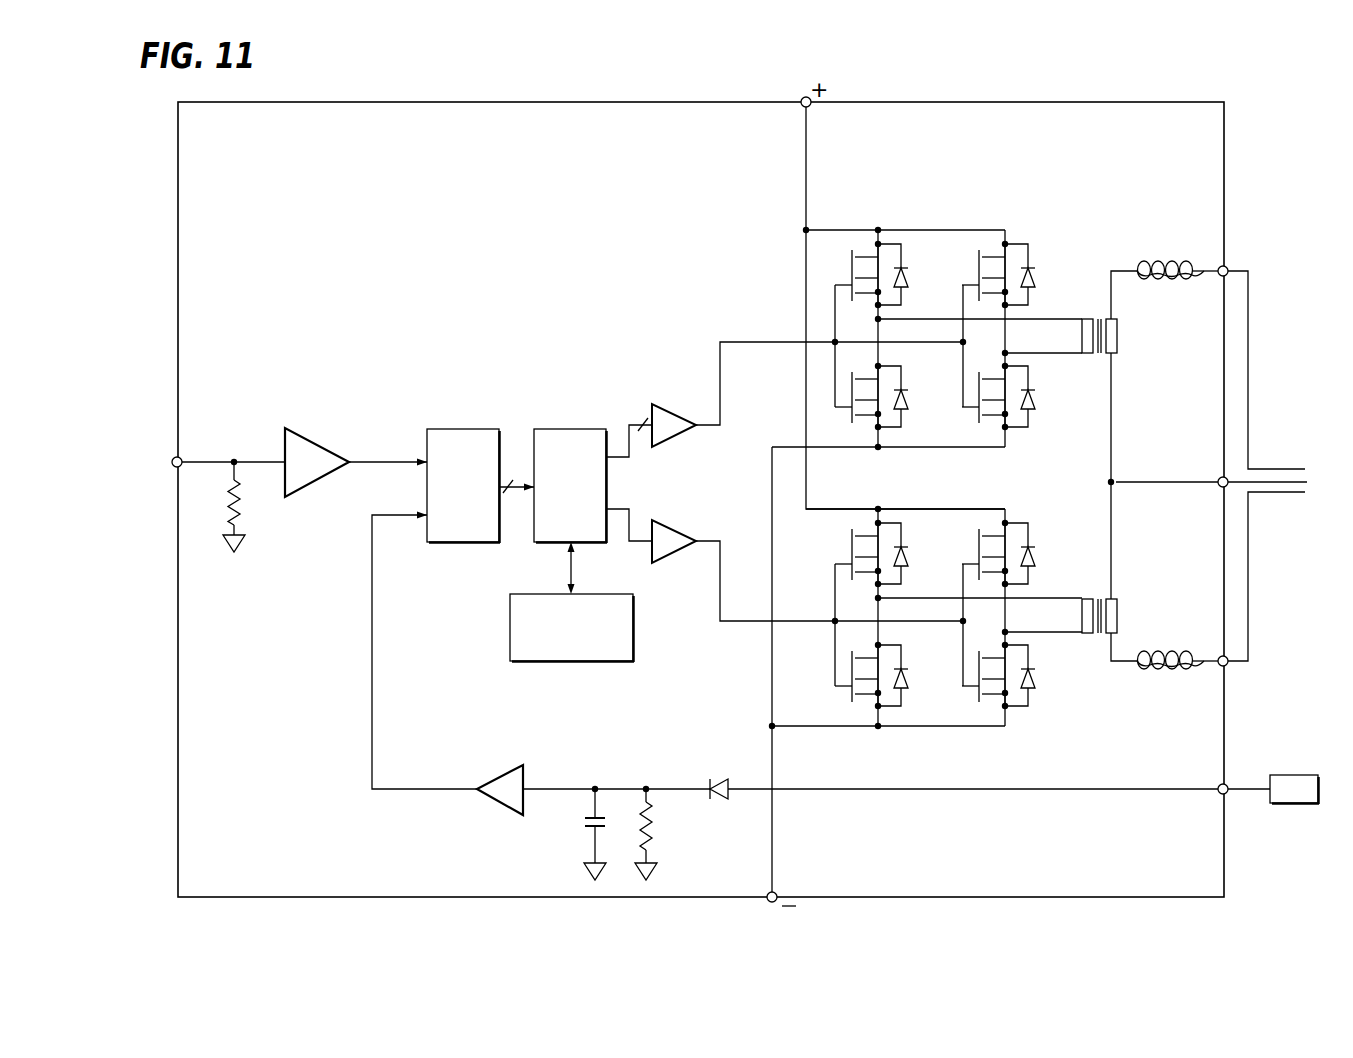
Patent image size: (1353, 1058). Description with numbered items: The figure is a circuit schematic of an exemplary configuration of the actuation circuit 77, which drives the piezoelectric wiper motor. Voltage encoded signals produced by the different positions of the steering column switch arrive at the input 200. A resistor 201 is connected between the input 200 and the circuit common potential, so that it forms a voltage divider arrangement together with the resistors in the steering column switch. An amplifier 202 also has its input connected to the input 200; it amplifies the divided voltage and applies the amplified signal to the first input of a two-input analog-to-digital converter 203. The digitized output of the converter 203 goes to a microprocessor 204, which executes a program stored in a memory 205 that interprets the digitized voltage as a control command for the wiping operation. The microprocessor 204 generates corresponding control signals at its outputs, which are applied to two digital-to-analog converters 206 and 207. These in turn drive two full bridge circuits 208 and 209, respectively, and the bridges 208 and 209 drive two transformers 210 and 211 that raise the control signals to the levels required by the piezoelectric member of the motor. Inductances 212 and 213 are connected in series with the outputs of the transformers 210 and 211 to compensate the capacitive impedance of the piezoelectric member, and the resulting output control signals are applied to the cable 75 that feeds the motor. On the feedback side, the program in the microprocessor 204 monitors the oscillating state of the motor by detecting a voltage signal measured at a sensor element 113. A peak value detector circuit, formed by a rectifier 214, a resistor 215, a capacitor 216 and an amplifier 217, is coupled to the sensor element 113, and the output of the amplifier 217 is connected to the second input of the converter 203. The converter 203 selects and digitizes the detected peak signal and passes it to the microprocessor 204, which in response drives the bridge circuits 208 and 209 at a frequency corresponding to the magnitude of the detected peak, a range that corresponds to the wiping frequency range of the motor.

The actuation circuit 77 is at (448, 102).
The input 200 is at (172, 462).
The resistor 201 is at (242, 503).
The amplifier 202 is at (305, 428).
The two-input analog-to-digital converter 203 is at (445, 528).
The microprocessor 204 is at (552, 528).
The memory 205 is at (553, 650).
The digital-to-analog converter 206 is at (662, 447).
The digital-to-analog converter 207 is at (654, 520).
The full bridge circuit 208 is at (935, 230).
The full bridge circuit 209 is at (923, 507).
The transformer 210 is at (1100, 318).
The transformer 211 is at (1100, 597).
The inductance 212 is at (1158, 267).
The inductance 213 is at (1160, 675).
The cable 75 is at (1214, 466).
The sensor element 113 is at (1285, 773).
The rectifier 214 is at (720, 780).
The resistor 215 is at (657, 837).
The capacitor 216 is at (581, 822).
The amplifier 217 is at (497, 789).